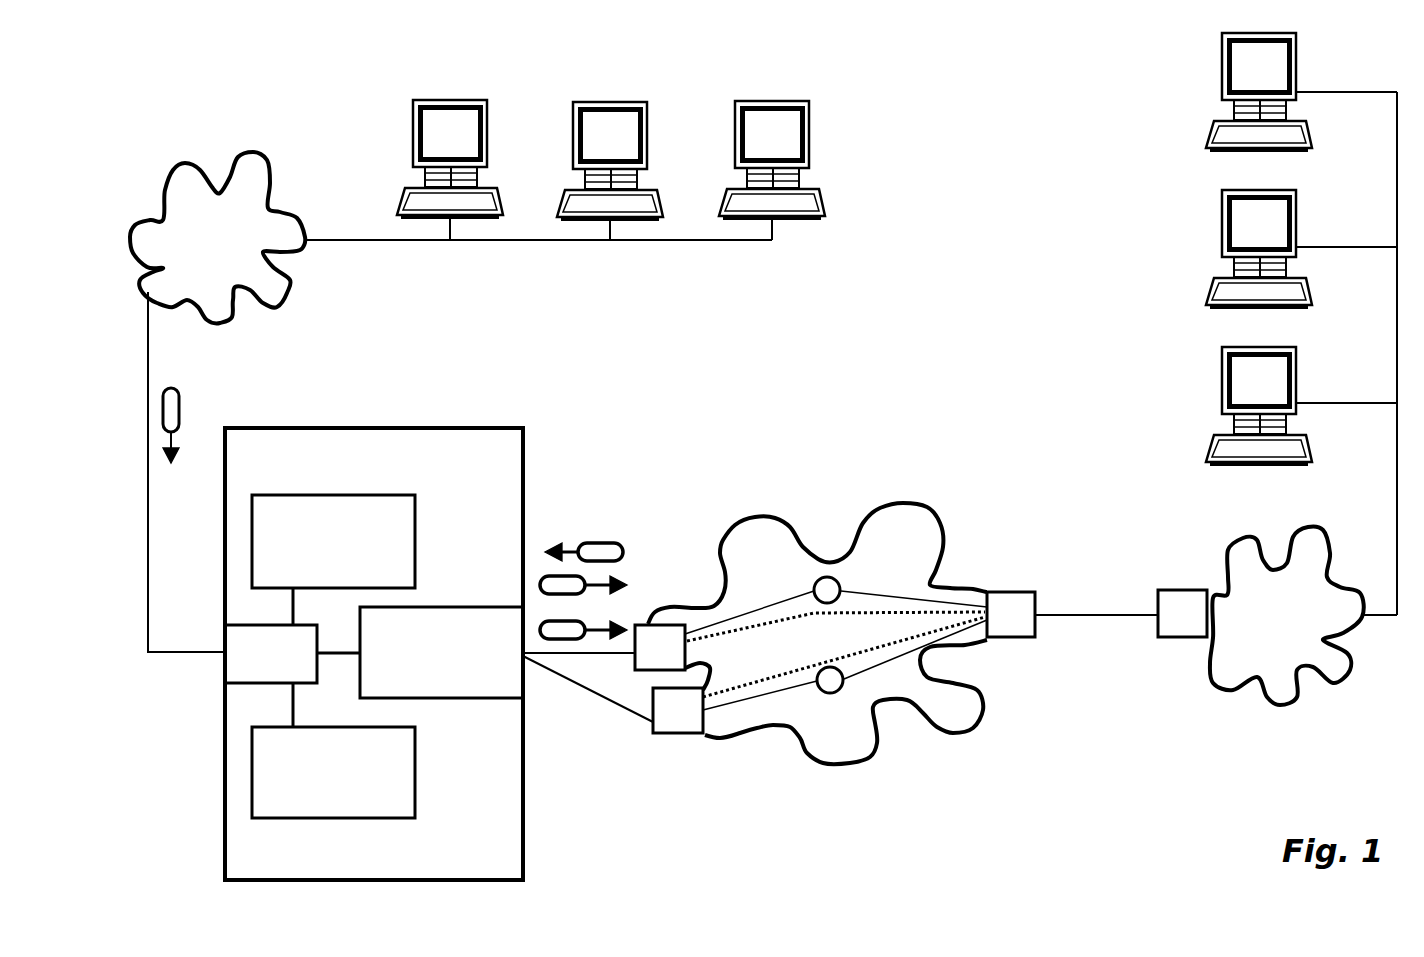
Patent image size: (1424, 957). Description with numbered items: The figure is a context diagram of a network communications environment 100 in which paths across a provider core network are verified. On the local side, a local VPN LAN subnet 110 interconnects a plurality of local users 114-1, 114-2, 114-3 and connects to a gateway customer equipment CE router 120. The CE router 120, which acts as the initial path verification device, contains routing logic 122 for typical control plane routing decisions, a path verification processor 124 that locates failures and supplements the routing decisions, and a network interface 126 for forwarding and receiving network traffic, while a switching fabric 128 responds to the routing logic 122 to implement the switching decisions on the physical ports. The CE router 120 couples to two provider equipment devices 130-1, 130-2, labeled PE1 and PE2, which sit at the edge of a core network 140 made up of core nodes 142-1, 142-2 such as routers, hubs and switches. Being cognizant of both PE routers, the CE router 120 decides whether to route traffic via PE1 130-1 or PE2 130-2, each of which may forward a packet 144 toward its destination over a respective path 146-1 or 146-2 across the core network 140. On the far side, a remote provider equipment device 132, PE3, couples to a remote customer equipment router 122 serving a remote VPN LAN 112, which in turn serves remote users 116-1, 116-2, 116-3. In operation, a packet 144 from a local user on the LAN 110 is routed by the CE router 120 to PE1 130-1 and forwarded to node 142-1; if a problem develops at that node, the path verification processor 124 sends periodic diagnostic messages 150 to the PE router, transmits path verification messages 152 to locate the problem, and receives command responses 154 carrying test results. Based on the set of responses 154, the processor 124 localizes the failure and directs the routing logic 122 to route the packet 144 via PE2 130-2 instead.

The network communications environment 100 is at (970, 56).
The local VPN LAN subnet 110 is at (283, 303).
The remote VPN LAN 112 is at (1280, 705).
The local user 114-1 is at (413, 150).
The local user 114-2 is at (573, 155).
The local user 114-3 is at (808, 155).
The remote user 116-1 is at (1208, 458).
The remote user 116-2 is at (1210, 303).
The remote user 116-3 is at (1208, 148).
The customer equipment CE router 120 is at (523, 428).
The routing logic 122 is at (415, 495).
The path verification processor 124 is at (415, 765).
The network interface 126 is at (443, 607).
The switching fabric 128 is at (225, 668).
The provider equipment device 130-1 is at (650, 625).
The provider equipment device 130-2 is at (656, 733).
The remote provider equipment device 132 is at (1037, 592).
The core network 140 is at (830, 566).
The core node 142-1 is at (840, 582).
The core node 142-2 is at (845, 684).
The packet 144 is at (178, 390).
The path 146-1 is at (775, 618).
The path 146-2 is at (758, 677).
The periodic diagnostic messages 150 is at (545, 577).
The path verification messages 152 is at (632, 627).
The command responses 154 is at (592, 543).